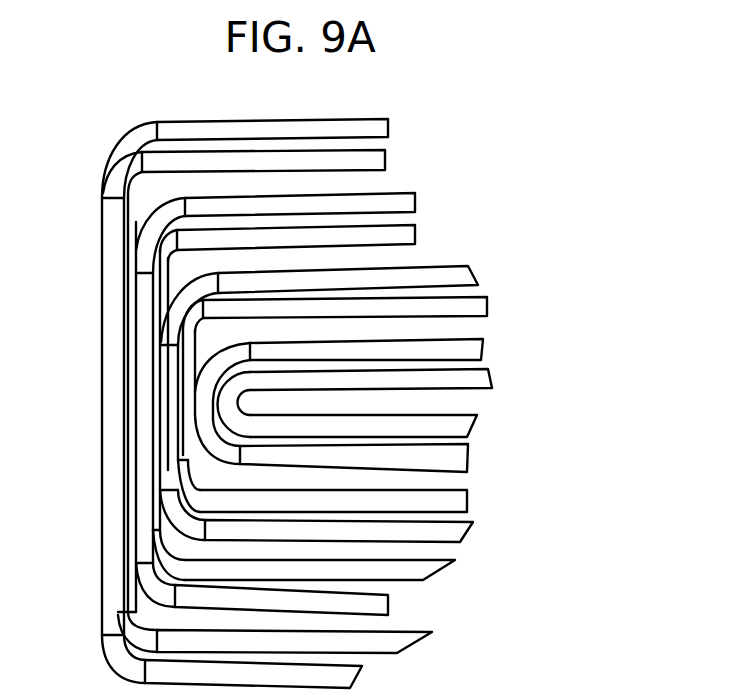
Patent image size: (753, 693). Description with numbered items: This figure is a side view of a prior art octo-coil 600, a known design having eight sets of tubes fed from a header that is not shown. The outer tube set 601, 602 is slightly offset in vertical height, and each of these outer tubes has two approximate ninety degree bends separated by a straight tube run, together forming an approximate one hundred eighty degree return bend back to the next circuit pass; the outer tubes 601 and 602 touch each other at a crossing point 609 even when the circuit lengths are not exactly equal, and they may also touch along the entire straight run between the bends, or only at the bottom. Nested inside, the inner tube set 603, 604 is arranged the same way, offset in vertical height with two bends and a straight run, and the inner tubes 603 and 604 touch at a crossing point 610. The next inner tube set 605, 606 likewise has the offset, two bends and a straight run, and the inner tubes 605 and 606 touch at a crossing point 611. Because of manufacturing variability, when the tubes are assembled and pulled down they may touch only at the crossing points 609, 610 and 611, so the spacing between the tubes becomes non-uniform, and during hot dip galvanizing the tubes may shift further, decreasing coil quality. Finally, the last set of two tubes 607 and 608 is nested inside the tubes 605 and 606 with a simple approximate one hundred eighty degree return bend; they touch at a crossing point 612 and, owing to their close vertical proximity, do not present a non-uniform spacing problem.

The prior art octo-coil 600 is at (399, 108).
The outer tube 601 is at (388, 124).
The outer tube 602 is at (385, 160).
The inner tube 603 is at (415, 202).
The inner tube 604 is at (415, 235).
The inner tube 605 is at (478, 276).
The inner tube 606 is at (487, 305).
The innermost tube 607 is at (483, 348).
The innermost tube 608 is at (492, 378).
The crossing point 609 is at (111, 186).
The crossing point 610 is at (141, 254).
The crossing point 611 is at (169, 328).
The crossing point 612 is at (201, 418).